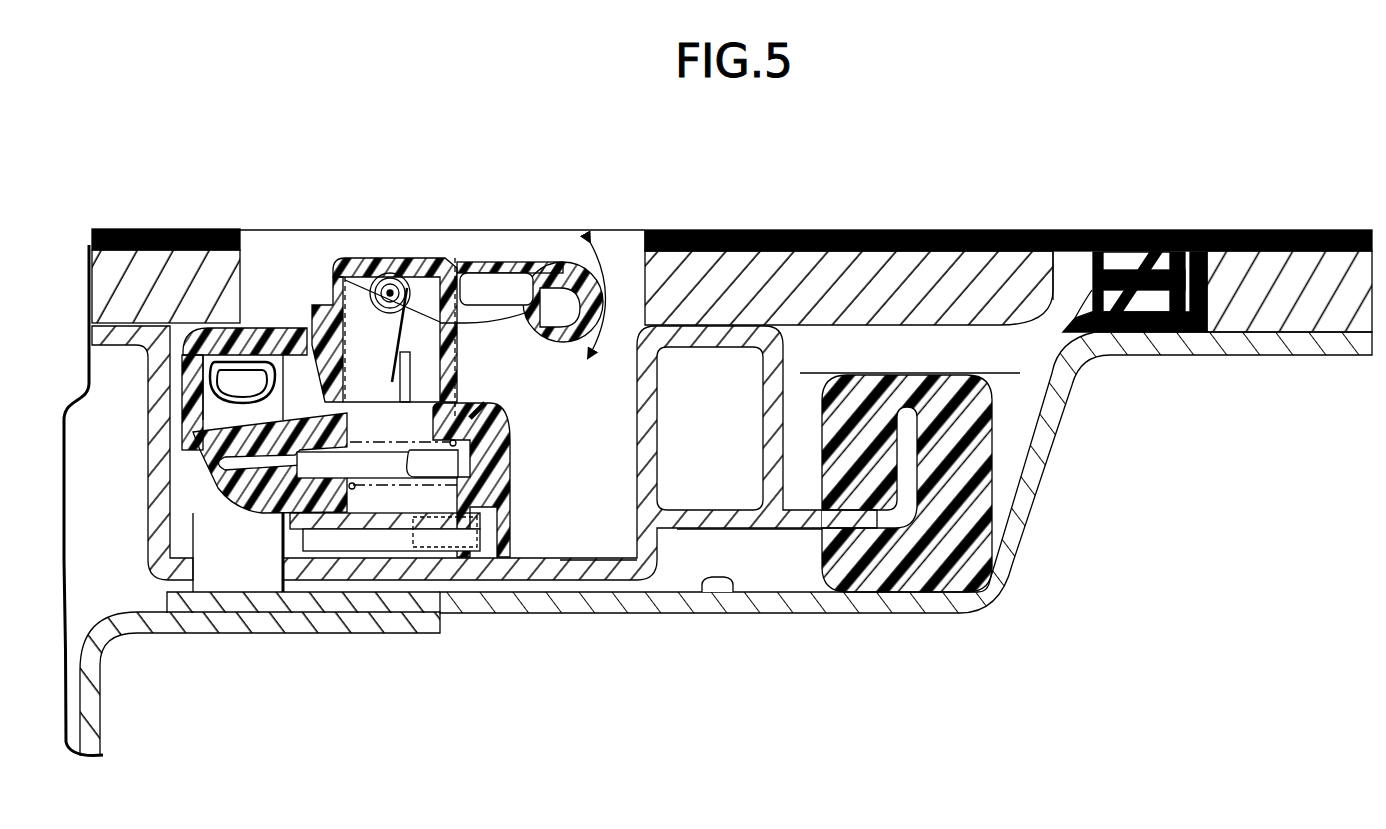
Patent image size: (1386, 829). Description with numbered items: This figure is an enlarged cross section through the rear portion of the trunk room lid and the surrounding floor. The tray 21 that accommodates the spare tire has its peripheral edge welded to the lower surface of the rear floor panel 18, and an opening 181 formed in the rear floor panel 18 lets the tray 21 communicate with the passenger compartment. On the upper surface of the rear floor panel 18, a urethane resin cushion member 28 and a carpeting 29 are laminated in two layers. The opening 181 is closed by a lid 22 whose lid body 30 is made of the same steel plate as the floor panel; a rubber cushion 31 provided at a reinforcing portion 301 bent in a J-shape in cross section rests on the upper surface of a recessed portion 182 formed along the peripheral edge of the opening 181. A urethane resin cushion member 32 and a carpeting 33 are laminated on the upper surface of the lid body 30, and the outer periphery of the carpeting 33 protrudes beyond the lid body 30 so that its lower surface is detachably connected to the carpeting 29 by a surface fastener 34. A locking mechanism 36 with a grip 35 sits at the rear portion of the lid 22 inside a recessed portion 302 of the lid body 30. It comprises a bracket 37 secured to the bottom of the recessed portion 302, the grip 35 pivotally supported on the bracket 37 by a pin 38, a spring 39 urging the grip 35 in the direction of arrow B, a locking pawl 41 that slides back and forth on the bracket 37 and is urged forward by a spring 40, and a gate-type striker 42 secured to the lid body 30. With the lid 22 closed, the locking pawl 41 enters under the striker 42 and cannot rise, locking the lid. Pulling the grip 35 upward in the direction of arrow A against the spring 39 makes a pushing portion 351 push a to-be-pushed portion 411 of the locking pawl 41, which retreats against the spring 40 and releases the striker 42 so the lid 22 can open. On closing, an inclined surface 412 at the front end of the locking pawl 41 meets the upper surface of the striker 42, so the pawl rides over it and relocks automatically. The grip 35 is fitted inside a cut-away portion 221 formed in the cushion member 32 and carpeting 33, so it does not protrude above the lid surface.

The rear floor panel 18 is at (1290, 360).
The opening 181 is at (167, 600).
The recessed portion 182 is at (733, 590).
The tray 21 is at (97, 680).
The lid 22 is at (756, 220).
The cut-away portion 221 is at (245, 242).
The urethane resin cushion member 28 is at (1333, 263).
The carpeting 29 is at (1297, 236).
The lid body 30 is at (121, 347).
The reinforcing portion 301 is at (813, 529).
The recessed portion 302 is at (577, 568).
The rubber cushion 31 is at (993, 422).
The urethane resin cushion member 32 is at (987, 230).
The carpeting 33 is at (905, 230).
The surface fastener 34 is at (1090, 285).
The grip 35 is at (561, 250).
The pushing portion 351 is at (305, 335).
The locking mechanism 36 is at (352, 222).
The bracket 37 is at (512, 455).
The pin 38 is at (392, 290).
The spring 39 is at (402, 380).
The spring 40 is at (482, 403).
The locking pawl 41 is at (260, 517).
The to-be-pushed portion 411 is at (385, 475).
The inclined surface 412 is at (260, 497).
The striker 42 is at (203, 374).